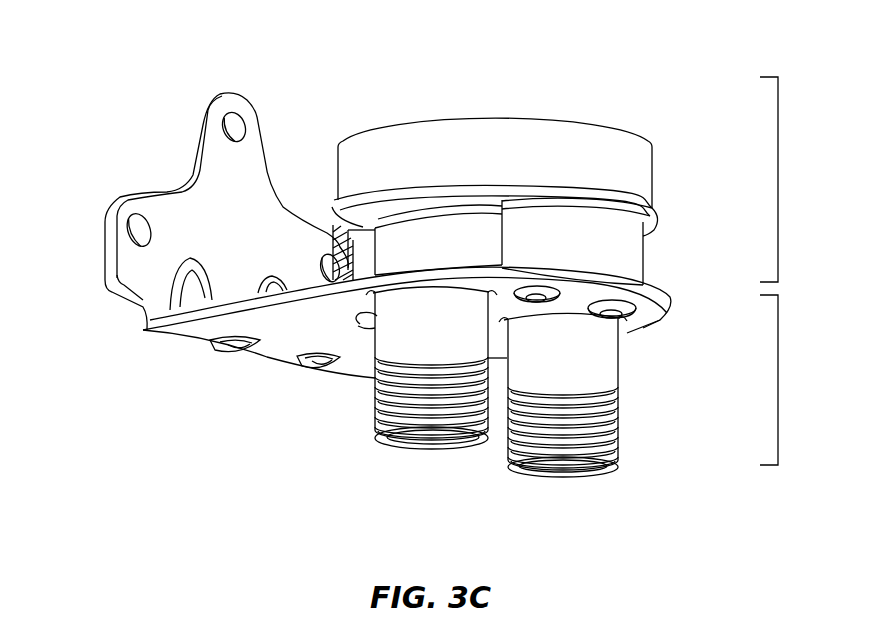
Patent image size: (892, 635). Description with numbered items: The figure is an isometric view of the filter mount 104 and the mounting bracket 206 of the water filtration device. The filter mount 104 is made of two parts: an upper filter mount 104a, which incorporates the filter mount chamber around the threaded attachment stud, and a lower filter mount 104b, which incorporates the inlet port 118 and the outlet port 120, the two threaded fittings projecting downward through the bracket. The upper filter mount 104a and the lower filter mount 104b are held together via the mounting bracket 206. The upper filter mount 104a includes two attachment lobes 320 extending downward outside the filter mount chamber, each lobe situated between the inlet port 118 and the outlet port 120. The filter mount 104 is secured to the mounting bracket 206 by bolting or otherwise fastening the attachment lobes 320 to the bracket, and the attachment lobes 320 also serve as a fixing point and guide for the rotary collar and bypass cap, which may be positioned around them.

The filter mount 104 is at (66, 62).
The upper filter mount 104a is at (780, 192).
The lower filter mount 104b is at (780, 428).
The inlet port 118 is at (437, 413).
The outlet port 120 is at (562, 420).
The mounting bracket 206 is at (275, 333).
The attachment lobes 320 is at (363, 252).